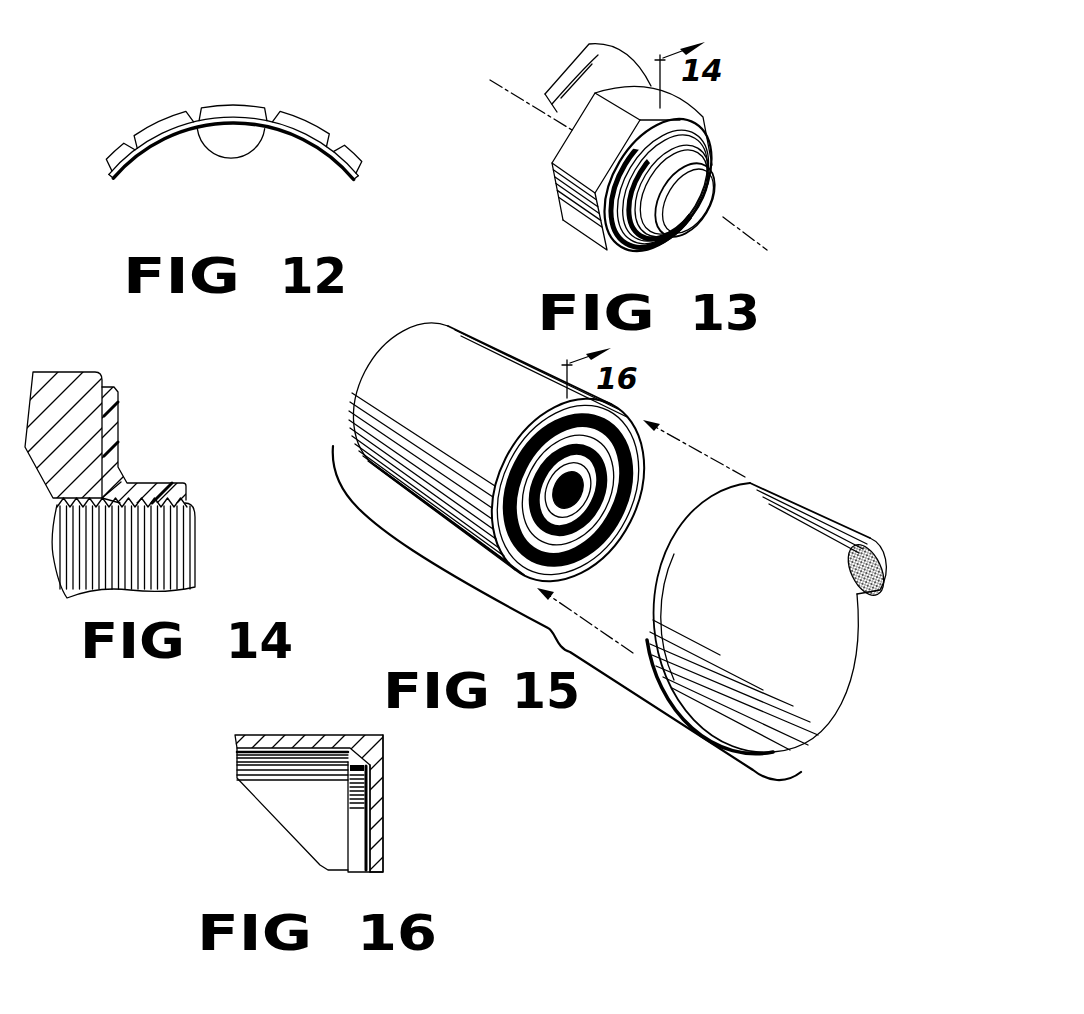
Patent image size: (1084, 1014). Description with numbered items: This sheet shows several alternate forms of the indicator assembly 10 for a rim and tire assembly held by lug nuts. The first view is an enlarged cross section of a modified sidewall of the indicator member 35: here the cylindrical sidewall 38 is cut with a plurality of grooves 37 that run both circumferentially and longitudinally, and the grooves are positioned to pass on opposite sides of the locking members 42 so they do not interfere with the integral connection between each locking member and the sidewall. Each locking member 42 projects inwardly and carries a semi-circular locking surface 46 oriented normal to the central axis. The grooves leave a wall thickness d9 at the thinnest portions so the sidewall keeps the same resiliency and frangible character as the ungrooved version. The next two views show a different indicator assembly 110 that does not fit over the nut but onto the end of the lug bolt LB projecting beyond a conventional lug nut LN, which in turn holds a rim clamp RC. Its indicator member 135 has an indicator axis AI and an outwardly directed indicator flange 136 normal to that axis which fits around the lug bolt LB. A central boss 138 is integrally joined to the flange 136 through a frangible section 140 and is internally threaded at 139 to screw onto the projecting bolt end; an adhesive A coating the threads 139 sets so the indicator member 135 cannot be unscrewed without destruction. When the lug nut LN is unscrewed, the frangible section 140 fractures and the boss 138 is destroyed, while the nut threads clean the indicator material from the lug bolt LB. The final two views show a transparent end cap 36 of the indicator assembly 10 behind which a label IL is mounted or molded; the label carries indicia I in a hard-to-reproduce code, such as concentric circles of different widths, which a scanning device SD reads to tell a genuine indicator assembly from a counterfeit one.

In FIG. 15, the indicator assembly 10 is at (472, 322).
In FIG. 16, the indicator assembly 10 is at (254, 726).
In FIG. 15, the indicator member 35 is at (490, 344).
In FIG. 16, the indicator member 35 is at (362, 732).
In FIG. 15, the end cap 36 is at (634, 418).
In FIG. 16, the end cap 36 is at (384, 847).
In FIG. 12, the grooves 37 is at (199, 108).
In FIG. 12, the cylindrical sidewall 38 is at (160, 112).
In FIG. 16, the cylindrical sidewall 38 is at (322, 737).
In FIG. 12, the locking members 42 is at (212, 160).
In FIG. 12, the semi-circular locking surface 46 is at (238, 148).
In FIG. 12, the wall thickness d9 is at (322, 101).
In FIG. 13, the indicator assembly 110 is at (716, 118).
In FIG. 14, the indicator assembly 110 is at (168, 409).
In FIG. 13, the indicator member 135 is at (711, 138).
In FIG. 14, the indicator member 135 is at (124, 392).
In FIG. 13, the indicator flange 136 is at (703, 147).
In FIG. 14, the indicator flange 136 is at (115, 419).
In FIG. 13, the central boss 138 is at (652, 173).
In FIG. 14, the central boss 138 is at (140, 482).
In FIG. 14, the internal threads 139 is at (170, 488).
In FIG. 14, the frangible section 140 is at (101, 493).
In FIG. 13, the lug nut LN is at (550, 153).
In FIG. 14, the lug nut LN is at (74, 383).
In FIG. 13, the lug bolt LB is at (713, 185).
In FIG. 14, the lug bolt LB is at (188, 556).
In FIG. 13, the rim clamp RC is at (611, 42).
In FIG. 13, the indicator axis AI is at (727, 221).
In FIG. 15, the scanning device SD is at (803, 498).
In FIG. 15, the indicia I is at (617, 498).
In FIG. 16, the indicia I is at (367, 817).
In FIG. 16, the label IL is at (378, 798).
In FIG. 14, the adhesive A is at (178, 503).